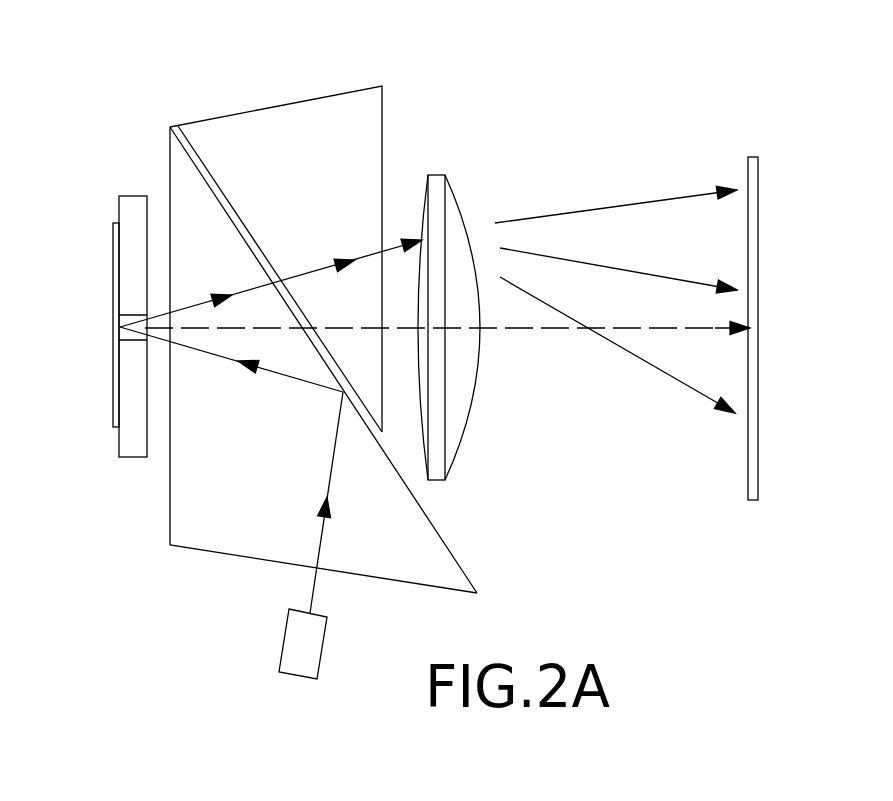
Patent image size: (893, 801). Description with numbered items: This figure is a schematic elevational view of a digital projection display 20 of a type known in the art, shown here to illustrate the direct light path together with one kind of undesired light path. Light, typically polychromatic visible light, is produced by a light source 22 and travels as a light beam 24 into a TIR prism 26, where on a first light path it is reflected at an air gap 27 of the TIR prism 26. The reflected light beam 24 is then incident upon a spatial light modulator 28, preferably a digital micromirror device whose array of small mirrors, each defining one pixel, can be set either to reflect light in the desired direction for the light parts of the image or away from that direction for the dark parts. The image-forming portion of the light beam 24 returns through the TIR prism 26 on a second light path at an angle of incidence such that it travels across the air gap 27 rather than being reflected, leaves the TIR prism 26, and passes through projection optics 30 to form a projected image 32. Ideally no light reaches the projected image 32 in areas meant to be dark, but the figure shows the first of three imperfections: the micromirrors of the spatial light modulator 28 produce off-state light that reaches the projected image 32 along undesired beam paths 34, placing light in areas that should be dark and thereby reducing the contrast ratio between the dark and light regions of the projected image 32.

The digital projection display 20 is at (170, 92).
The light source 22 is at (283, 650).
The light beam 24 is at (312, 587).
The TIR prism 26 is at (215, 552).
The air gap 27 is at (243, 230).
The spatial light modulator 28 is at (113, 380).
The projection optics 30 is at (466, 430).
The projected image 32 is at (748, 358).
The undesired beam paths 34 is at (307, 273).